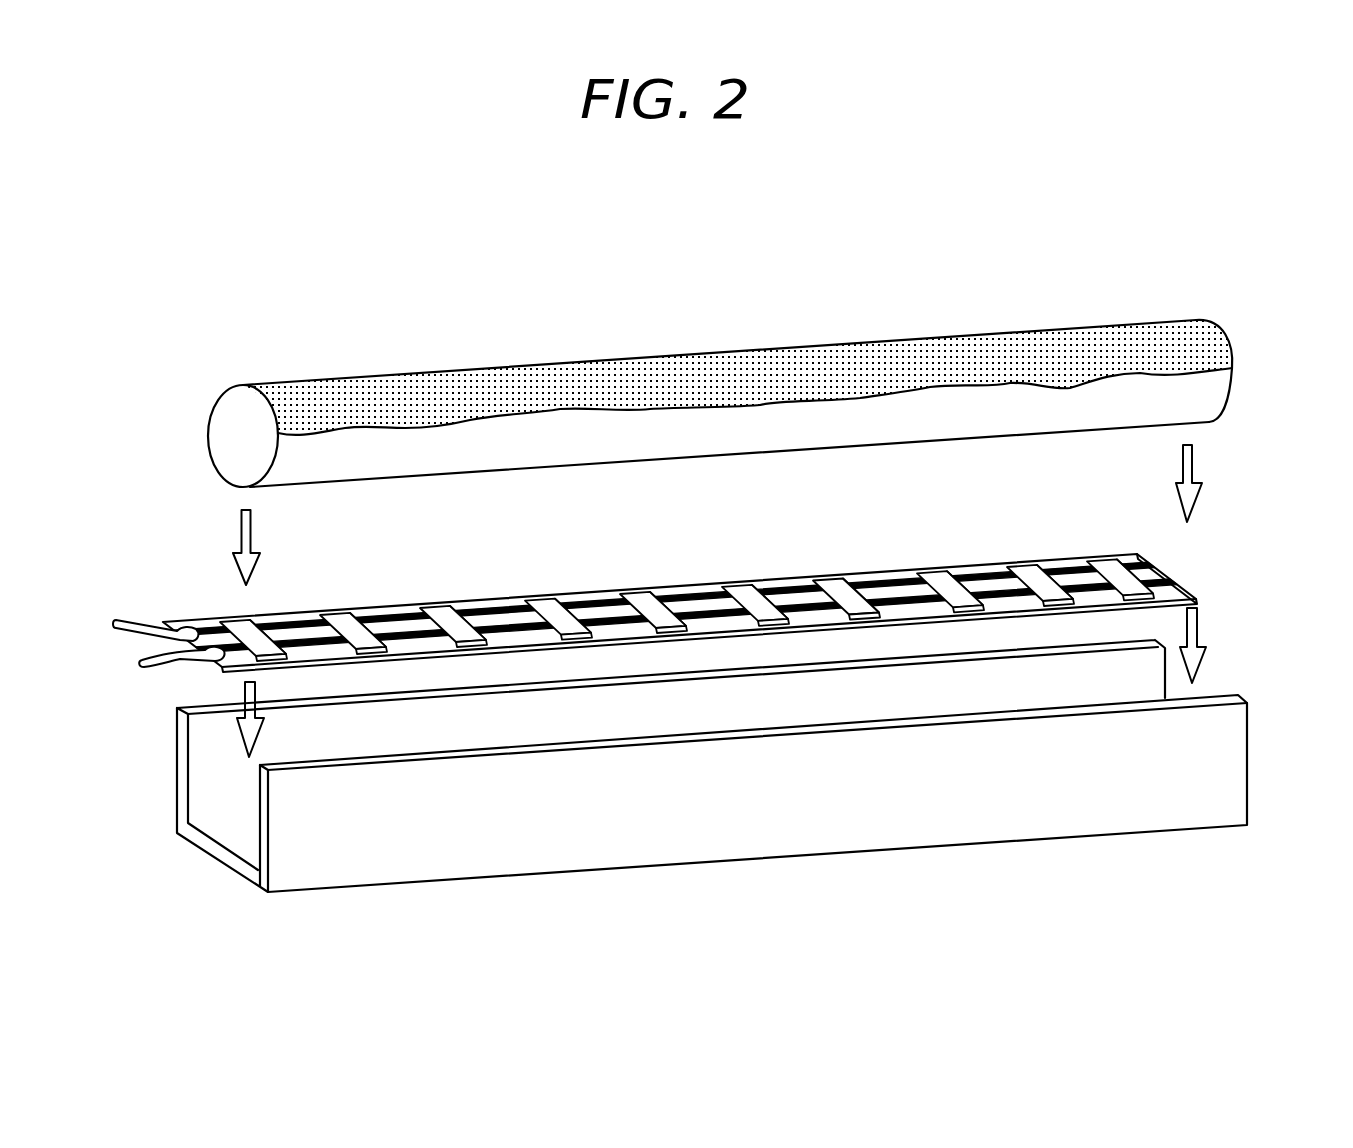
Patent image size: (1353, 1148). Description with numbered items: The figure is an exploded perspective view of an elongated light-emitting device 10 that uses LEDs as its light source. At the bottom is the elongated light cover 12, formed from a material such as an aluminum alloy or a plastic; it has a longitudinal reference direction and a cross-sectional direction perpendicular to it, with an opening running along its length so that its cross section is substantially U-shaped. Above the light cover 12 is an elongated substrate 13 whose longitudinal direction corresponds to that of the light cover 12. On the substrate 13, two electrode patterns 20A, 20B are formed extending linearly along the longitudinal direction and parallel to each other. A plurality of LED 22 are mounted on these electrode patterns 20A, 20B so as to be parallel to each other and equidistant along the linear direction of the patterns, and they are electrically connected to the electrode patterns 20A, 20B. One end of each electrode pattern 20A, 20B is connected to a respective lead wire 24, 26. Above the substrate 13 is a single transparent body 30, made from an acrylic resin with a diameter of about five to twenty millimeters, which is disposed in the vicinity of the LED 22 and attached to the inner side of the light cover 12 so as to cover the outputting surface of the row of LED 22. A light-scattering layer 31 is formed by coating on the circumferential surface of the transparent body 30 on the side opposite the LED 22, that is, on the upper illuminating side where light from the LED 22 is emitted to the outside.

The light-emitting device 10 is at (696, 613).
The light cover 12 is at (1207, 817).
The substrate 13 is at (694, 594).
The electrode pattern 20A is at (506, 607).
The electrode pattern 20B is at (527, 636).
The LED 22 is at (344, 600).
The lead wire 24 is at (117, 623).
The lead wire 26 is at (145, 668).
The transparent body 30 is at (336, 378).
The light-scattering layer 31 is at (809, 372).